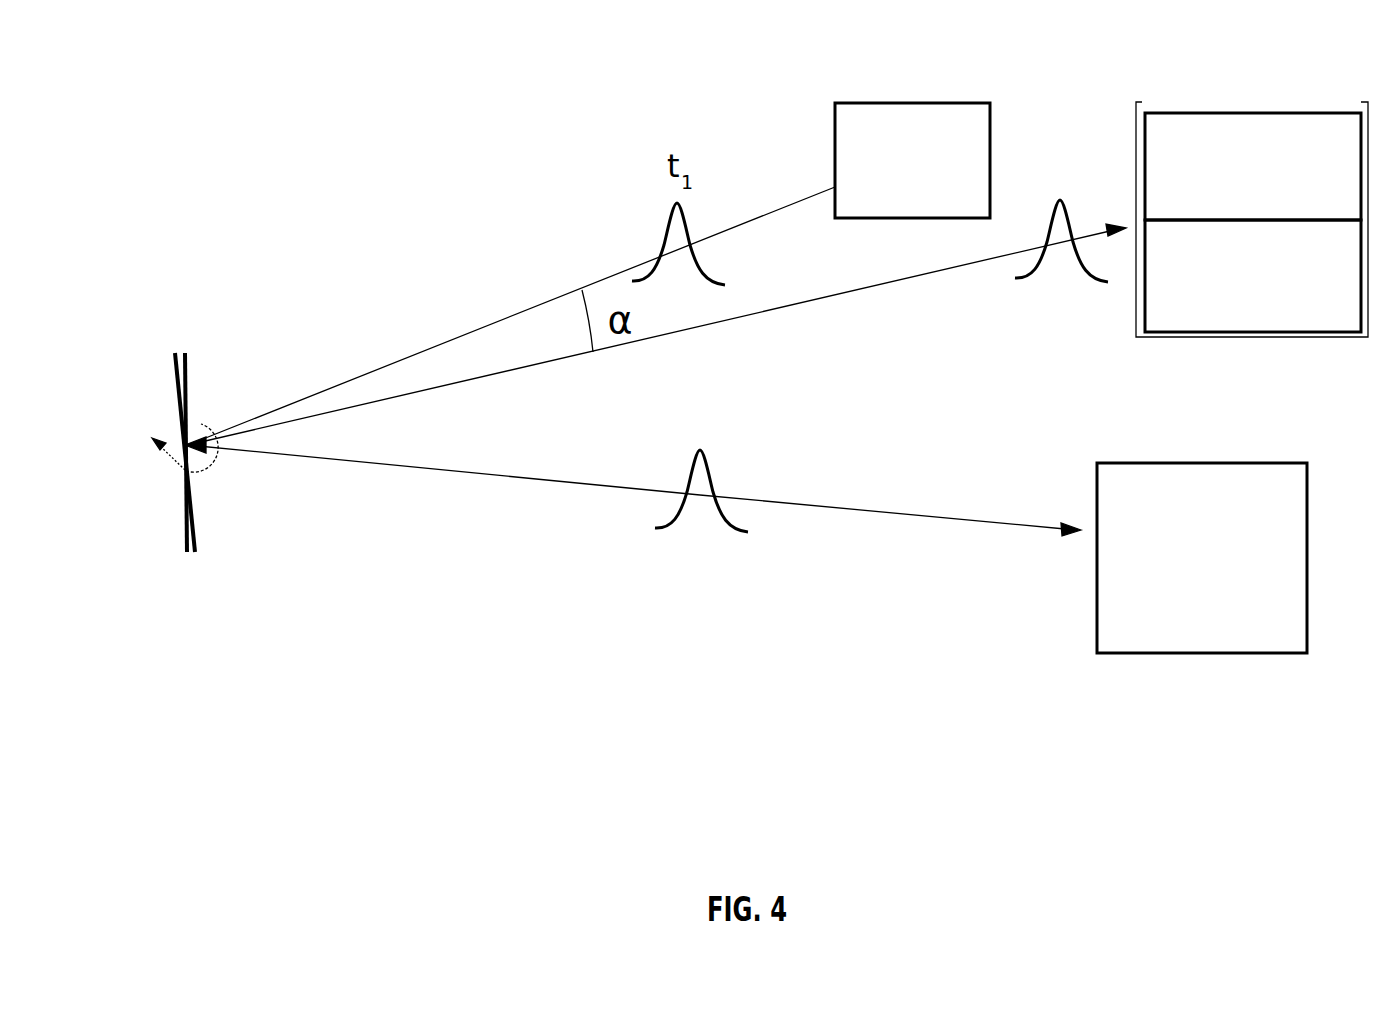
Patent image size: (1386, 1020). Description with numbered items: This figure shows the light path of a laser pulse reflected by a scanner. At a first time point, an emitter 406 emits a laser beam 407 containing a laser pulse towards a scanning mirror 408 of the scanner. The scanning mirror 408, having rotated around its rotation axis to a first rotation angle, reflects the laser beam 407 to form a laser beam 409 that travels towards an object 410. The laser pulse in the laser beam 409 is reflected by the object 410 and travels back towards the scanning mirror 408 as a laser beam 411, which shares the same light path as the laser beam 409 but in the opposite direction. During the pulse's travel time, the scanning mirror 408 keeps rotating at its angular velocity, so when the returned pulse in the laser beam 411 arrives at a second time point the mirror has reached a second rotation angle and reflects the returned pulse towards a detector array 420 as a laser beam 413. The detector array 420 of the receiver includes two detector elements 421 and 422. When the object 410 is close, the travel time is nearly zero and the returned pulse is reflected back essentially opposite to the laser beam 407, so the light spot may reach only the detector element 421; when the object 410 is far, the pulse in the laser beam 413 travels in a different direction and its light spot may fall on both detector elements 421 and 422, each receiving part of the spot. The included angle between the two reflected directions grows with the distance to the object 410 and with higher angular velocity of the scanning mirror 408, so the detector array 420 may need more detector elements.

The emitter 406 is at (912, 160).
The laser beam 407 is at (477, 325).
The scanning mirror 408 is at (183, 489).
The laser beam 409 is at (472, 473).
The object 410 is at (1202, 558).
The laser beam 411 is at (855, 510).
The laser beam 413 is at (763, 315).
The detector array 420 is at (1252, 169).
The detector element 421 is at (1253, 166).
The detector element 422 is at (1253, 276).